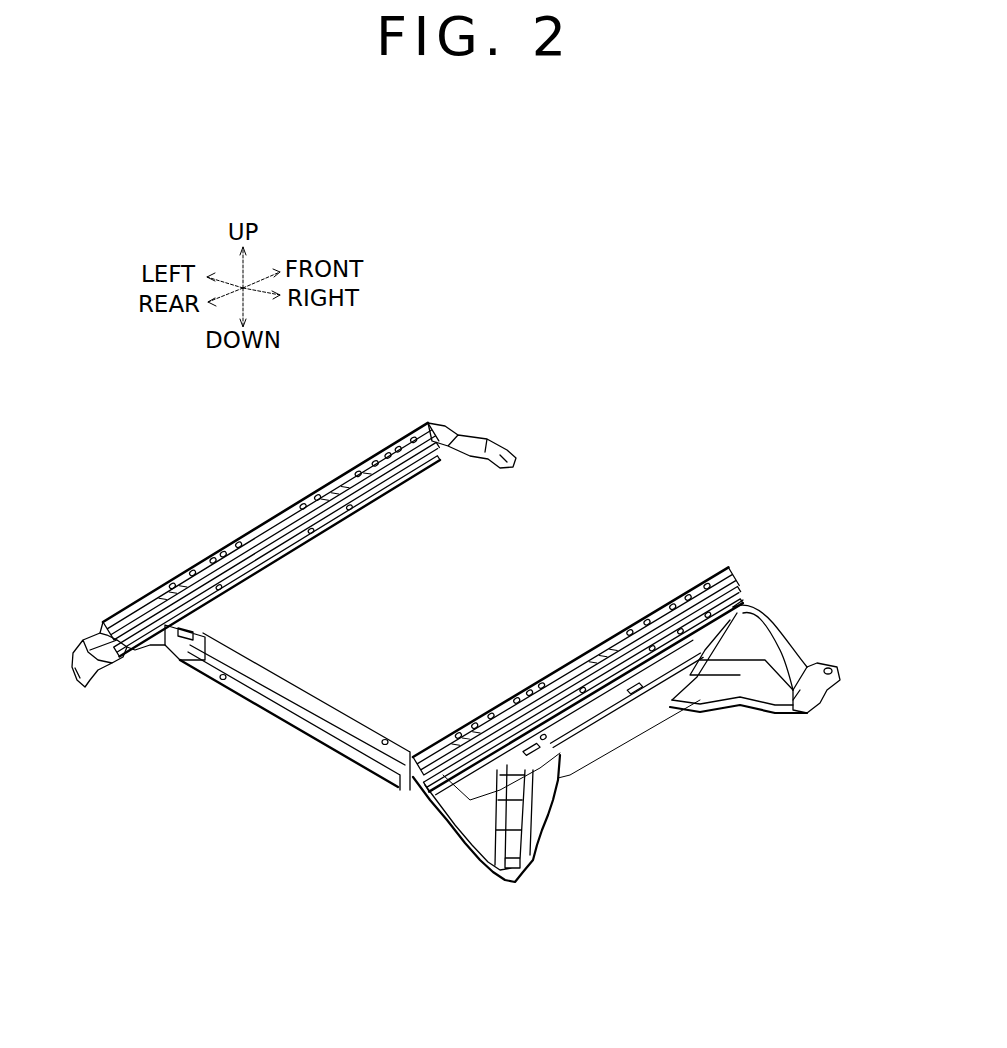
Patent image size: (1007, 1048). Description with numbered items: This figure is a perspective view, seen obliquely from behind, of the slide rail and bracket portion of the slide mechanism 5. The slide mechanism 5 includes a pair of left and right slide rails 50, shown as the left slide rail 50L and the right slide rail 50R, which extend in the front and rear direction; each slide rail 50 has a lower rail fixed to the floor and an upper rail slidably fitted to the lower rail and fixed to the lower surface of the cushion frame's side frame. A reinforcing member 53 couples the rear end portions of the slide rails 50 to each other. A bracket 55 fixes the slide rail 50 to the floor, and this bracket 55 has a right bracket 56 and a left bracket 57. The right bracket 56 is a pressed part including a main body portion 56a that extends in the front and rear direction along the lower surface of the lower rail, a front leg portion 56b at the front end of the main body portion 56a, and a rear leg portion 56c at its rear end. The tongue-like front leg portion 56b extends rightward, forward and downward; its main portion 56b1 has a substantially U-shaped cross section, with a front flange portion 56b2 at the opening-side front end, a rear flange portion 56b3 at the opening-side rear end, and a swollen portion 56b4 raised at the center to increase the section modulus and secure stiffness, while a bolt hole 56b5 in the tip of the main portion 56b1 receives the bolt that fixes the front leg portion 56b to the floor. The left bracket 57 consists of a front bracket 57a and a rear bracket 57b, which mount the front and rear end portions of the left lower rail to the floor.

The slide mechanism 5 is at (667, 400).
The slide rail 50 is at (419, 607).
The left slide rail 50L is at (95, 503).
The right slide rail 50R is at (392, 638).
The reinforcing member 53 is at (288, 722).
The bracket 55 is at (454, 616).
The right bracket 56 is at (592, 745).
The main body portion 56a is at (590, 715).
The front leg portion 56b is at (767, 605).
The main portion 56b1 is at (808, 720).
The front flange portion 56b2 is at (782, 625).
The rear flange portion 56b3 is at (742, 718).
The swollen portion 56b4 is at (700, 695).
The bolt hole 56b5 is at (793, 697).
The rear leg portion 56c is at (448, 818).
The left bracket 57 is at (485, 438).
The front bracket 57a is at (472, 430).
The rear bracket 57b is at (83, 648).